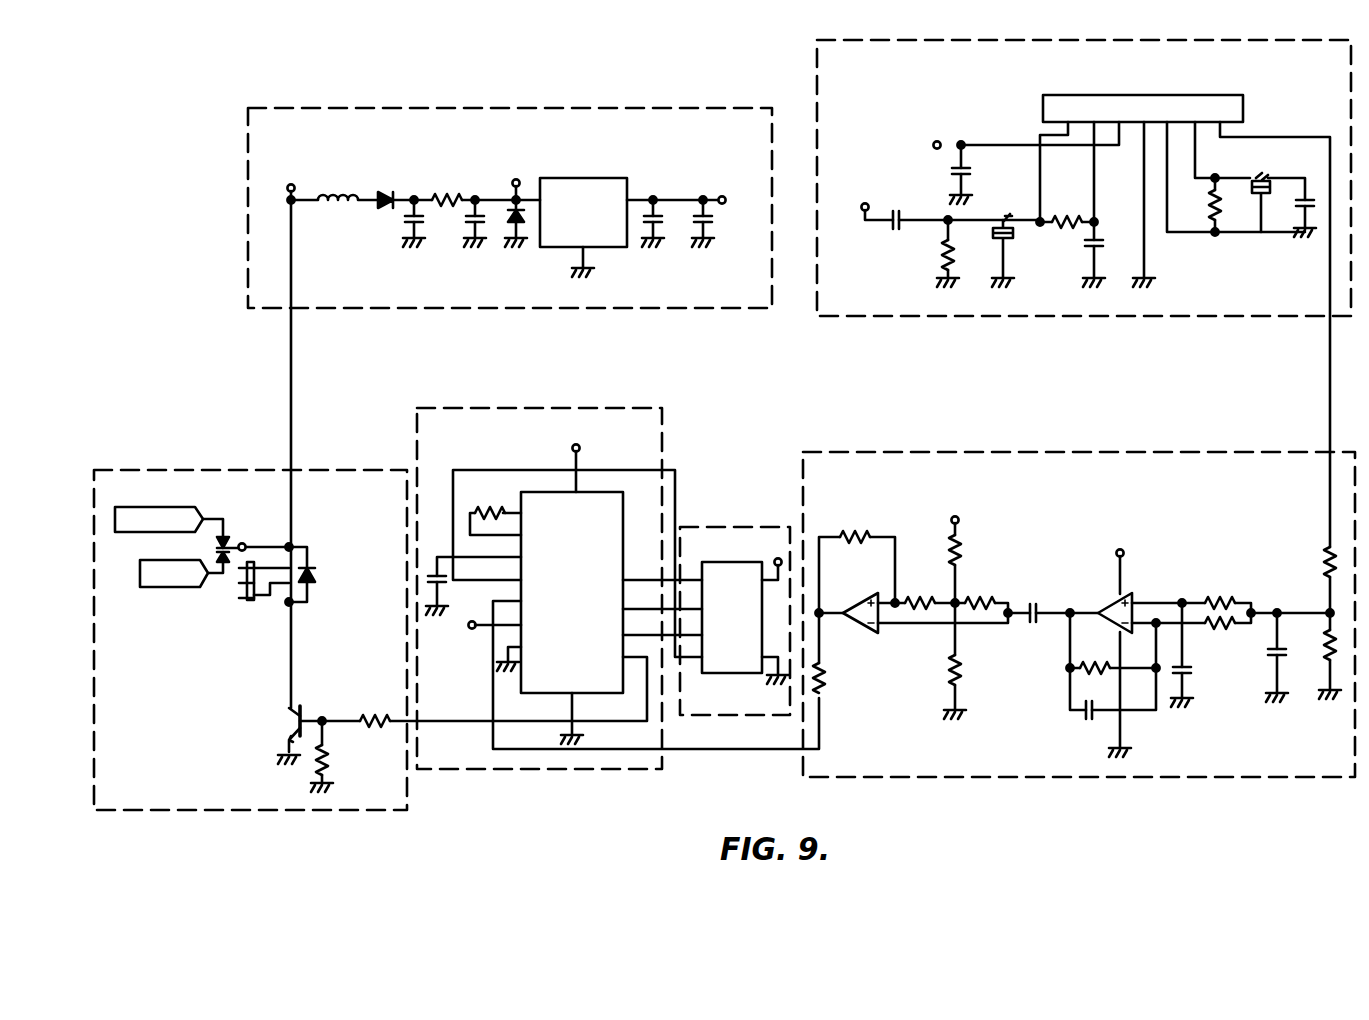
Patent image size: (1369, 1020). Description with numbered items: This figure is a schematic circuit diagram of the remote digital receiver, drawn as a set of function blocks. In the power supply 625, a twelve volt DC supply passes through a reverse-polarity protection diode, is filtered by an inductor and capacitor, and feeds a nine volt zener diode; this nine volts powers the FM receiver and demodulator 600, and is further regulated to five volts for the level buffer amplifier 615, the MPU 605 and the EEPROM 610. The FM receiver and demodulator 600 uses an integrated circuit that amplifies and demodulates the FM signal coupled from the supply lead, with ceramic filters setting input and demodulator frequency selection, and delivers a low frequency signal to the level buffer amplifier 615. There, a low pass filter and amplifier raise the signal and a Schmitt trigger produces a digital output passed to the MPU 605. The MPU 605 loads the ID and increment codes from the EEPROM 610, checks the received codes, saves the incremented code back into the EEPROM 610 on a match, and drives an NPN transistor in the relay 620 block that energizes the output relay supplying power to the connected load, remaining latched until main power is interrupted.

The FM receiver and demodulator 600 is at (1163, 40).
The MPU 605 is at (546, 408).
The EEPROM 610 is at (729, 527).
The level buffer amplifier 615 is at (893, 452).
The relay 620 is at (183, 470).
The power supply 625 is at (626, 108).